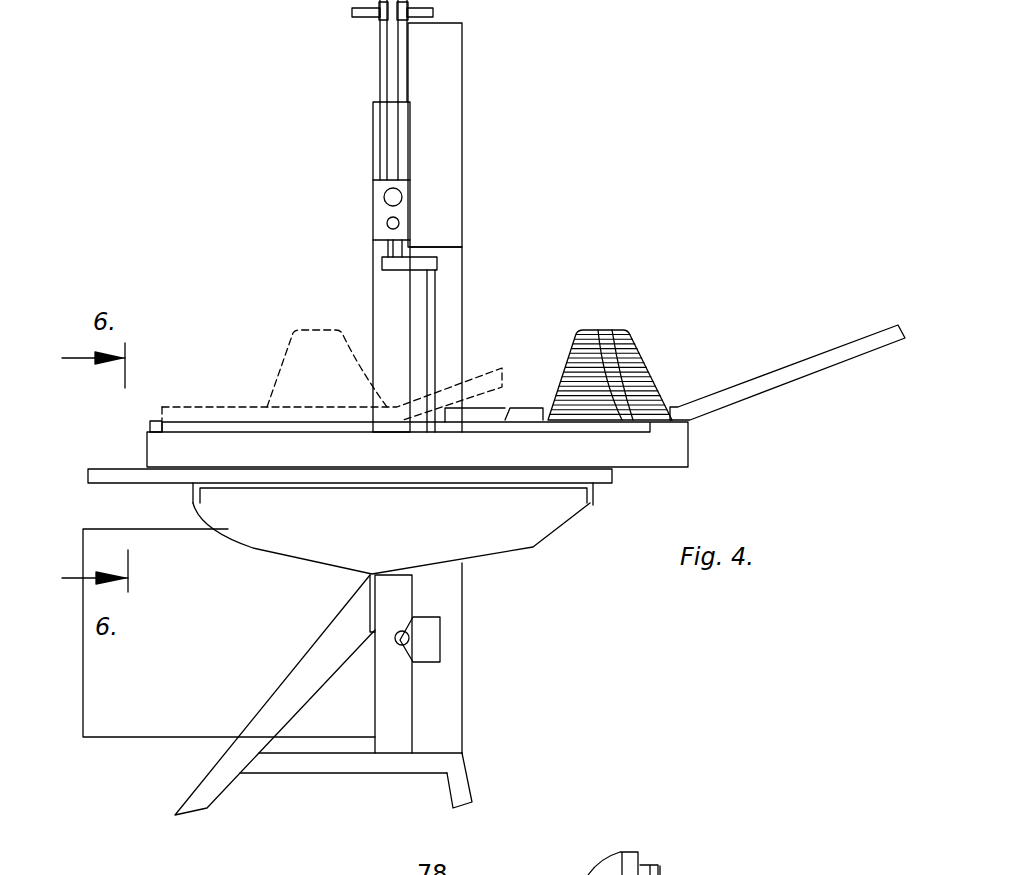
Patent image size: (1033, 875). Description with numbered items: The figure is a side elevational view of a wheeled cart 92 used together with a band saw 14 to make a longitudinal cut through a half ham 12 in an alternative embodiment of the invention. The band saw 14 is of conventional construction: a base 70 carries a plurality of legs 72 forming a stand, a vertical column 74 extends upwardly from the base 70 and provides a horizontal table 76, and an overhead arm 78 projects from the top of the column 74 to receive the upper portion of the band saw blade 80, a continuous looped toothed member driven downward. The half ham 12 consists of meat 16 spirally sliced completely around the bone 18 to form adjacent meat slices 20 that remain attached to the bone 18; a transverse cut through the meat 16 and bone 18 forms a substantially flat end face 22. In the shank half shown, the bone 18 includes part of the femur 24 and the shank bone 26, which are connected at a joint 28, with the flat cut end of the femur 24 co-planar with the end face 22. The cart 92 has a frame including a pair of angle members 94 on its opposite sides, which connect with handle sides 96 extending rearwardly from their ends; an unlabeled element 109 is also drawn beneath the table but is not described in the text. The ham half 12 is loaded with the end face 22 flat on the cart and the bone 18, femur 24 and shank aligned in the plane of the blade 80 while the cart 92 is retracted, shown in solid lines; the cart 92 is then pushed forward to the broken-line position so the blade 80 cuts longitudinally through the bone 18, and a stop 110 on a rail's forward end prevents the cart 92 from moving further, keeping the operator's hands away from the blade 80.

The half ham 12 is at (315, 345).
The band saw 14 is at (500, 262).
The meat 16 is at (578, 396).
The bone 18 is at (600, 333).
The meat slices 20 is at (625, 392).
The end face 22 is at (648, 422).
The femur 24 is at (635, 420).
The shank bone 26 is at (612, 332).
The joint 28 is at (620, 397).
The base 70 is at (378, 763).
The legs 72 is at (212, 788).
The vertical column 74 is at (452, 257).
The horizontal table 76 is at (528, 475).
The overhead arm 78 is at (447, 110).
The band saw blade 80 is at (436, 293).
The wheeled cart 92 is at (762, 471).
The angle members 94 is at (242, 415).
The handle sides 96 is at (477, 378).
The base block 109 is at (339, 455).
The stop 110 is at (150, 420).